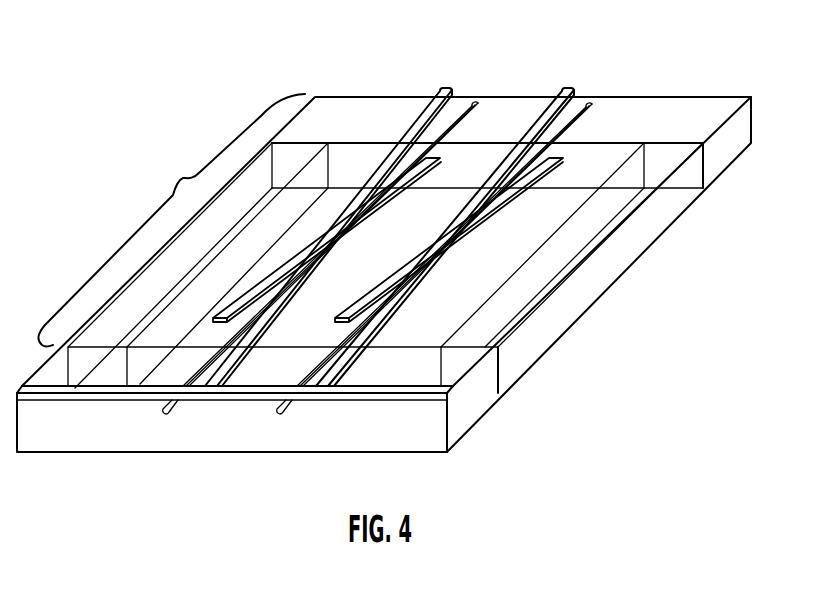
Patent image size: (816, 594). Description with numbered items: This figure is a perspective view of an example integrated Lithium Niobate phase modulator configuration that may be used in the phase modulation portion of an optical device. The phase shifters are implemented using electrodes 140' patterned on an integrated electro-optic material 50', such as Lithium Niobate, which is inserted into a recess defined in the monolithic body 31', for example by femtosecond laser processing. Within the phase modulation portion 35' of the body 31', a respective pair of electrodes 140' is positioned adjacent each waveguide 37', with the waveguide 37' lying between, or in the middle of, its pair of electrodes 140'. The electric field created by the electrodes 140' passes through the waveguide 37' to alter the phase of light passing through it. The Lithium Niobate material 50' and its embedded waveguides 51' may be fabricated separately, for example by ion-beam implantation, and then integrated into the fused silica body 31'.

The monolithic body 31' is at (391, 253).
The phase modulation portion 35' is at (171, 220).
The waveguide 37' is at (420, 226).
The electro-optic material 50' is at (388, 177).
The embedded waveguide 51' is at (328, 209).
The electrodes 140' is at (389, 208).